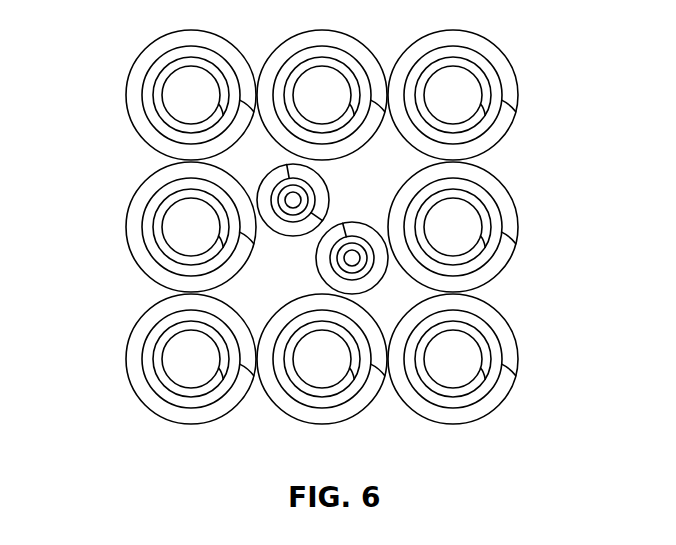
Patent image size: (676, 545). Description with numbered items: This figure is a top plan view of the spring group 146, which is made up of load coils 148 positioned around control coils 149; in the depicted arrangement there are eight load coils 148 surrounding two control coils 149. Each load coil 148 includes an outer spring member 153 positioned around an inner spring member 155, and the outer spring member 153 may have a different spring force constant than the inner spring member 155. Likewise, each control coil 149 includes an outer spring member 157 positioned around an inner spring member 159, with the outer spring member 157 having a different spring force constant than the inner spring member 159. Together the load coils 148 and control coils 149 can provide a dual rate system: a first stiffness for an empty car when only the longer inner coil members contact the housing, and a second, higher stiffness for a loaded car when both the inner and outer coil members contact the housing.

The spring group 146 is at (79, 392).
The load coil 148 is at (517, 91).
The control coil 149 is at (286, 165).
The outer spring member 153 is at (133, 65).
The inner spring member 155 is at (155, 100).
The outer spring member 157 is at (331, 193).
The inner spring member 159 is at (278, 215).